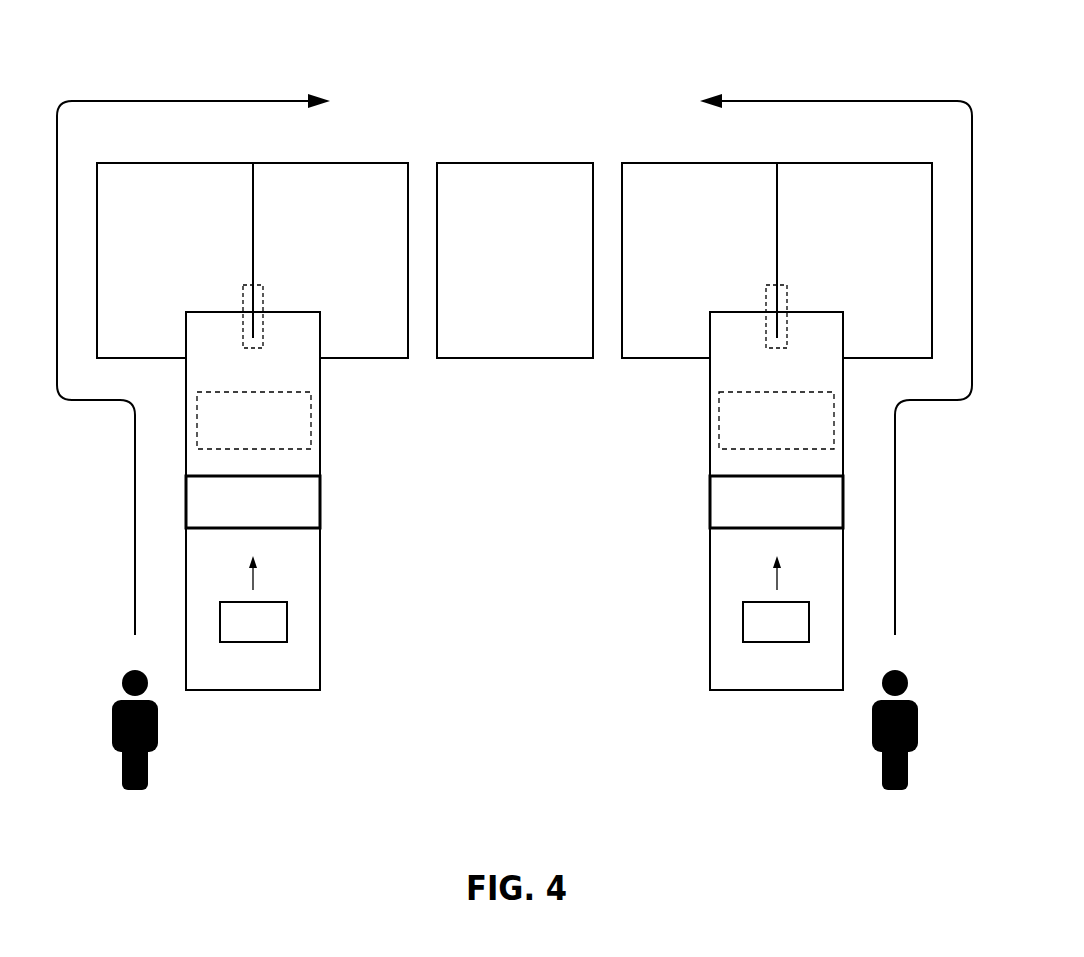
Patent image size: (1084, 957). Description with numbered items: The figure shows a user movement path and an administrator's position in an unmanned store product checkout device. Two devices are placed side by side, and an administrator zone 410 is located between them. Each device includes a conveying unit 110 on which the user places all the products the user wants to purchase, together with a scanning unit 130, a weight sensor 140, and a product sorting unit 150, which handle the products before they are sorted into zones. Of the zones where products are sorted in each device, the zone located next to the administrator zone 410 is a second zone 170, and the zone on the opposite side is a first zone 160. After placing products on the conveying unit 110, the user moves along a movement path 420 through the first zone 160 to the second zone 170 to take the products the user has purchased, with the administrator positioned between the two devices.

The conveying unit 110 is at (310, 620).
The scanning unit 130 is at (320, 500).
The weight sensor 140 is at (311, 420).
The product sorting unit 150 is at (263, 343).
The first zone 160 is at (175, 175).
The second zone 170 is at (330, 175).
The administrator zone 410 is at (515, 175).
The movement path 420 is at (253, 99).